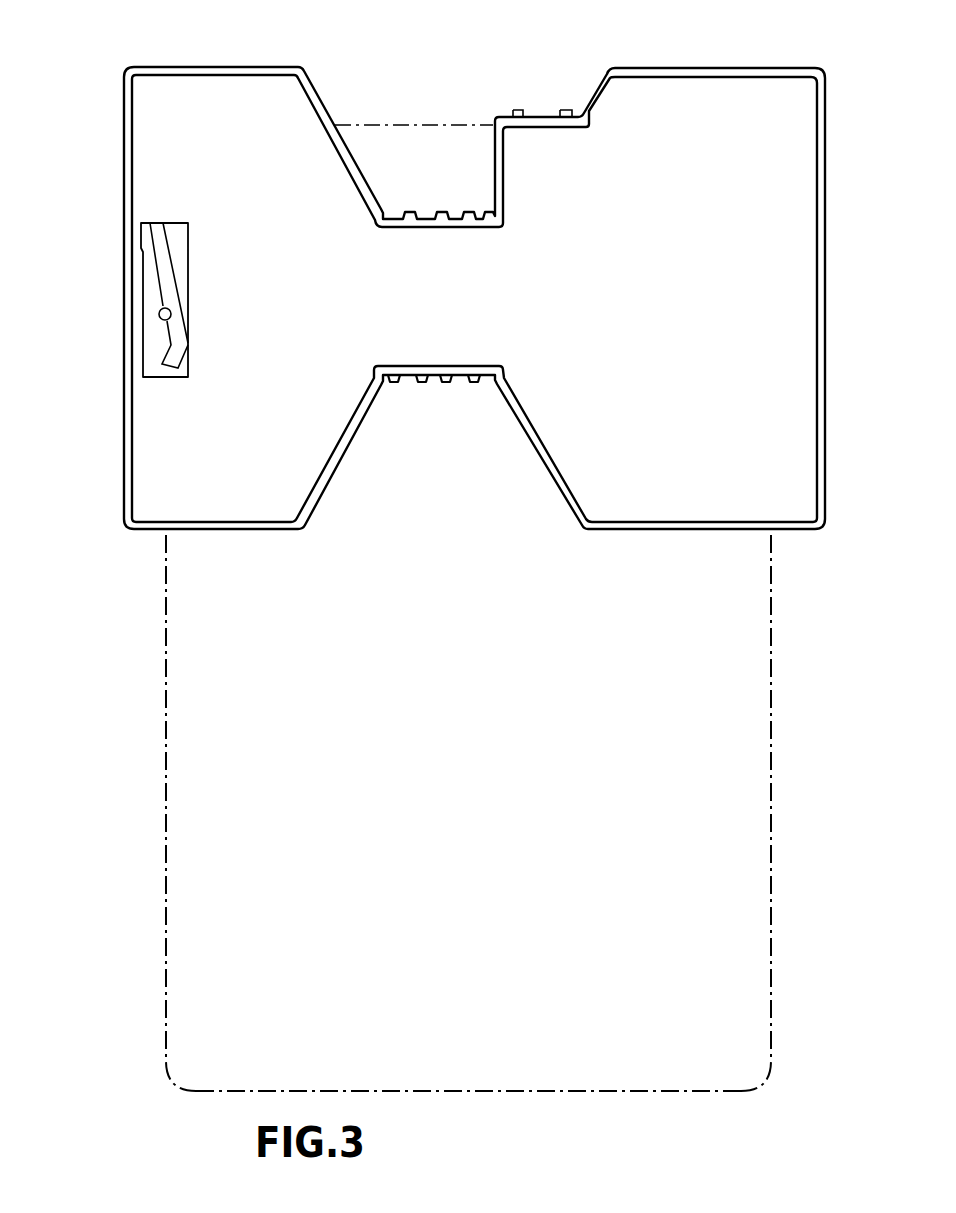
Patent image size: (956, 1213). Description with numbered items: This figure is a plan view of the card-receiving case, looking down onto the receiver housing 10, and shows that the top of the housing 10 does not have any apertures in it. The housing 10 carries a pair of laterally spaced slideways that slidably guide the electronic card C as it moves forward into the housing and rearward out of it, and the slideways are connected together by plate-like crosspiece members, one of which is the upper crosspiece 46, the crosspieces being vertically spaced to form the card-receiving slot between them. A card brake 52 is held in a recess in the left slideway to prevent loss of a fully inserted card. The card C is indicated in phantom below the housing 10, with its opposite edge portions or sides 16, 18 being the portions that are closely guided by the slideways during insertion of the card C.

The receiver housing 10 is at (700, 69).
The upper crosspiece 46 is at (363, 443).
The card brake 52 is at (165, 278).
The side of the card 18 is at (165, 800).
The side of the card 16 is at (771, 866).
The electronic card C is at (748, 710).